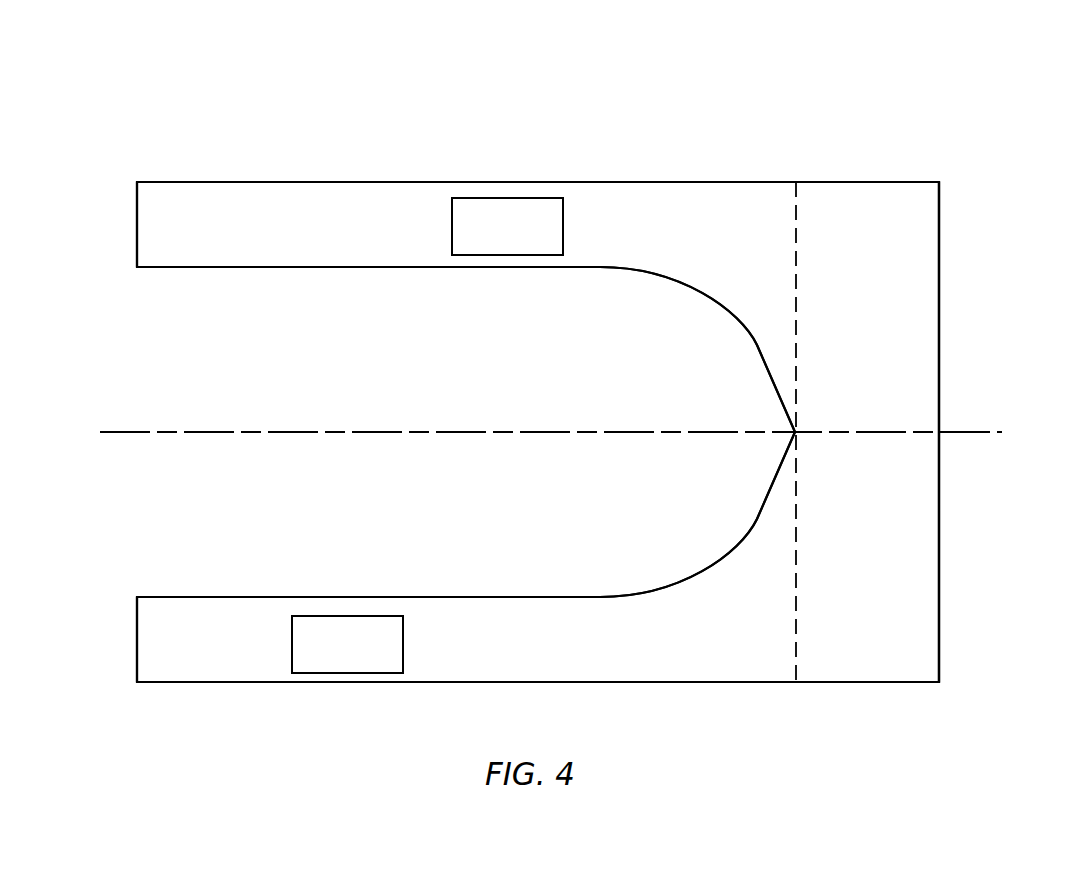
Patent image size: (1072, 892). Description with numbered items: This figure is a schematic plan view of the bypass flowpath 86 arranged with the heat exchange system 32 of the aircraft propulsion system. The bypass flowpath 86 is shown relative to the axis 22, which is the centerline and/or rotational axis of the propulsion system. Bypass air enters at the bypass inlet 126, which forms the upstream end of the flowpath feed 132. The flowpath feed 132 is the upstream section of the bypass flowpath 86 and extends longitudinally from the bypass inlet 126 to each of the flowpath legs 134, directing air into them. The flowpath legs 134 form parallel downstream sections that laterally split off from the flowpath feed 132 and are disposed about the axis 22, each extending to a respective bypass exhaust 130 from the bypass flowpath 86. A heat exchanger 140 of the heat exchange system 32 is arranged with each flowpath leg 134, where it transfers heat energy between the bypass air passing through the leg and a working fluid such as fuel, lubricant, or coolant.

The heat exchange system 32 is at (557, 152).
The bypass flowpath 86 is at (866, 208).
The flowpath feed 132 is at (846, 379).
The flowpath legs 134 is at (646, 241).
The bypass exhausts 130 is at (137, 227).
The heat exchangers 140 is at (485, 234).
The bypass inlet 126 is at (939, 338).
The axis 22 is at (992, 432).